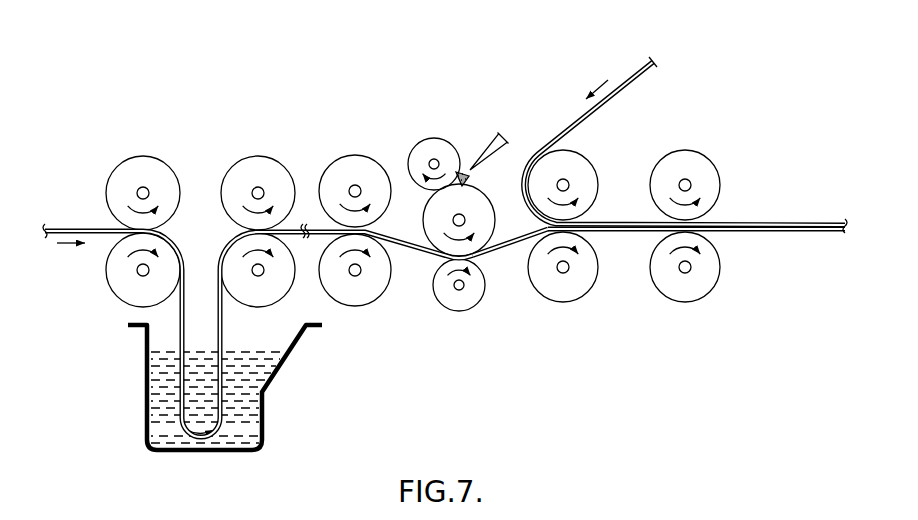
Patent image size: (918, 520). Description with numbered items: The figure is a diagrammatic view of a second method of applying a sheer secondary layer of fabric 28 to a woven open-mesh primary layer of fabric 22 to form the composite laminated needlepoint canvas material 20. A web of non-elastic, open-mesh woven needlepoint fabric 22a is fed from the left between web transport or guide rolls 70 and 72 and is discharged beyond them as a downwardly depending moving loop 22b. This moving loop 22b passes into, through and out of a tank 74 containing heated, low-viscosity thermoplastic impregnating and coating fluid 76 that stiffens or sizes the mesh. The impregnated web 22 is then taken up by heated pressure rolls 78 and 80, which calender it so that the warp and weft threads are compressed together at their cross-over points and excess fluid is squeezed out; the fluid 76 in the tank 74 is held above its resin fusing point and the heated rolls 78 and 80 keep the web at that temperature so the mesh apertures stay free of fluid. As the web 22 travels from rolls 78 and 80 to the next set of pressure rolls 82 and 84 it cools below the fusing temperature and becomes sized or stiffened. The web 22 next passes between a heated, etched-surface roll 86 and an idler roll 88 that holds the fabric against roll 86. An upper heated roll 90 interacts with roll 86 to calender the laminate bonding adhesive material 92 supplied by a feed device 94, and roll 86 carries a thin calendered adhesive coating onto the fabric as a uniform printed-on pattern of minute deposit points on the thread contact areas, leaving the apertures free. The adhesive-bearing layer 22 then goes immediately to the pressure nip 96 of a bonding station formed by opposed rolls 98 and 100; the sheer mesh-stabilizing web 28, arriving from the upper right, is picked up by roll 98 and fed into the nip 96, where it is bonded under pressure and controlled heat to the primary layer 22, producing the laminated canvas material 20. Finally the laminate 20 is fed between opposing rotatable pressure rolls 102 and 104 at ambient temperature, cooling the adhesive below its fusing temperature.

The composite laminated needlepoint canvas material 20 is at (622, 219).
The woven open-mesh primary layer of fabric 22 is at (223, 245).
The web of open-mesh woven needlepoint fabric 22a is at (78, 228).
The downwardly depending moving loop of open-mesh fabric 22b is at (187, 332).
The sheer secondary layer of fabric 28 is at (633, 70).
The web transport or guide roll 70 is at (149, 165).
The web transport or guide roll 72 is at (113, 300).
The tank 74 is at (145, 393).
The thermoplastic fabric impregnating and coating fluid 76 is at (240, 400).
The heated pressure roll 78 is at (265, 165).
The heated pressure roll 80 is at (292, 295).
The pressure roll 82 is at (357, 158).
The pressure roll 84 is at (368, 293).
The heated etched-surface roll 86 is at (489, 198).
The idler roll 88 is at (455, 311).
The upper heated roll 90 is at (437, 139).
The laminate bonding adhesive material 92 is at (462, 170).
The feed device 94 is at (506, 150).
The pressure nip 96 is at (522, 252).
The bonding station roll 98 is at (594, 163).
The bonding station roll 100 is at (572, 302).
The rotatable pressure roll 102 is at (712, 157).
The rotatable pressure roll 104 is at (686, 302).